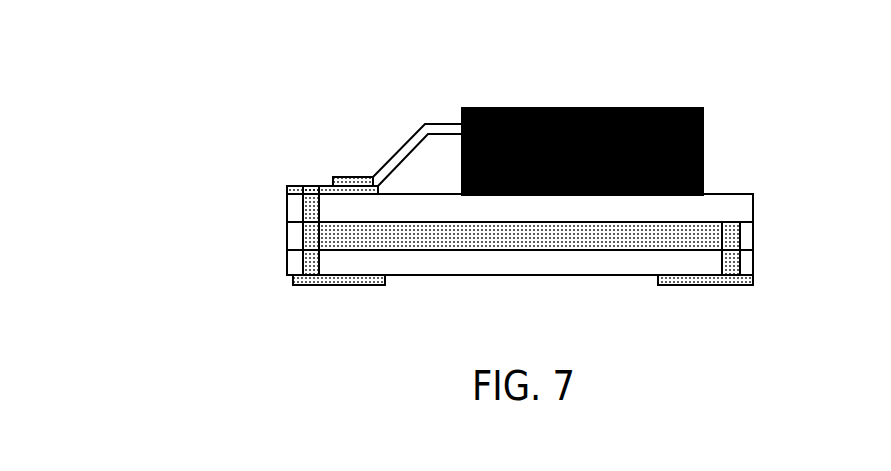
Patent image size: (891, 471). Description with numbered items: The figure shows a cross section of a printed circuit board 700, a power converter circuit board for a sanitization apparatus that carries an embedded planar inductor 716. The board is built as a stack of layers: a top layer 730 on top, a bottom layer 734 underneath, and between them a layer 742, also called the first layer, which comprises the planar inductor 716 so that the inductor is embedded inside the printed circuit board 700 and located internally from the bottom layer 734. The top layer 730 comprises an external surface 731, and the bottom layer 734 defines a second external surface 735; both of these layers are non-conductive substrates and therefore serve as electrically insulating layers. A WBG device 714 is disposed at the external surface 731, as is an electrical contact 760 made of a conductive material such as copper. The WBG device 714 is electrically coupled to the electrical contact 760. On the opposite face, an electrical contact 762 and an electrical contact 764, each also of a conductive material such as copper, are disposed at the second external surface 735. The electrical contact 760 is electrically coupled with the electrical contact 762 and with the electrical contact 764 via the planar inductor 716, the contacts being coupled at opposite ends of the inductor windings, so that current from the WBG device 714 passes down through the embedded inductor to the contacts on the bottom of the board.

The printed circuit board 700 is at (333, 105).
The WBG device 714 is at (605, 112).
The planar inductor 716 is at (756, 235).
The top layer 730 is at (286, 209).
The external surface 731 is at (724, 195).
The bottom layer 734 is at (286, 263).
The second external surface 735 is at (405, 275).
The layer 742 is at (275, 223).
The electrical contact 760 is at (317, 186).
The electrical contact 762 is at (712, 285).
The electrical contact 764 is at (342, 285).